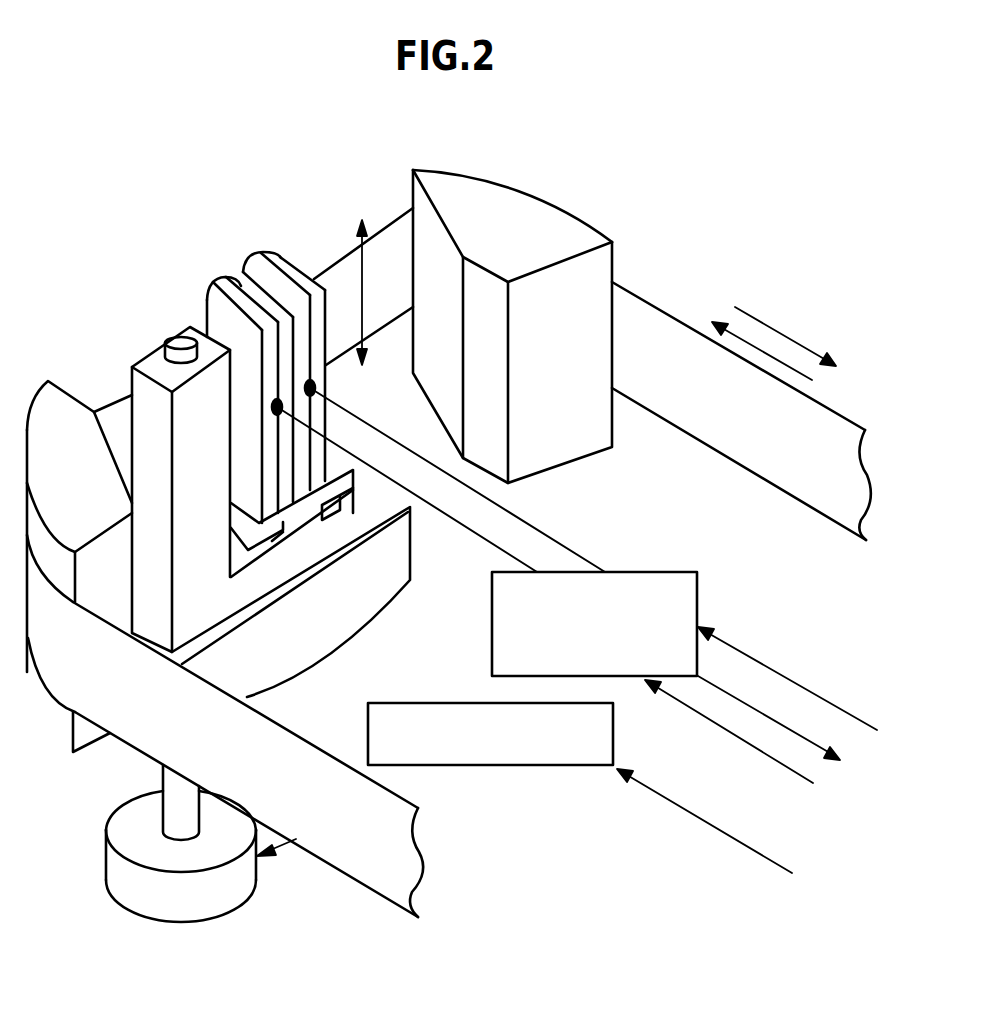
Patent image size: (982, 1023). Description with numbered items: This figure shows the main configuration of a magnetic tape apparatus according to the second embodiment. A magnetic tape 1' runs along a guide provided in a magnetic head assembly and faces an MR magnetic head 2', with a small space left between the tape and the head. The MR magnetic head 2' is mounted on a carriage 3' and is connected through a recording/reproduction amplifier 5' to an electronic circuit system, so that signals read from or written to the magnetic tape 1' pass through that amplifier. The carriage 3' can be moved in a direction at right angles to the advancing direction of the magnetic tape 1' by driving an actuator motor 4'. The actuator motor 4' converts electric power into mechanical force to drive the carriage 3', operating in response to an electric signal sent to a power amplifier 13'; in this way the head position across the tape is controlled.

The magnetic tape 1' is at (592, 374).
The MR magnetic head 2' is at (340, 364).
The carriage 3' is at (226, 622).
The actuator motor 4' is at (295, 878).
The recording/reproduction amplifier 5' is at (684, 664).
The power amplifier 13' is at (580, 788).